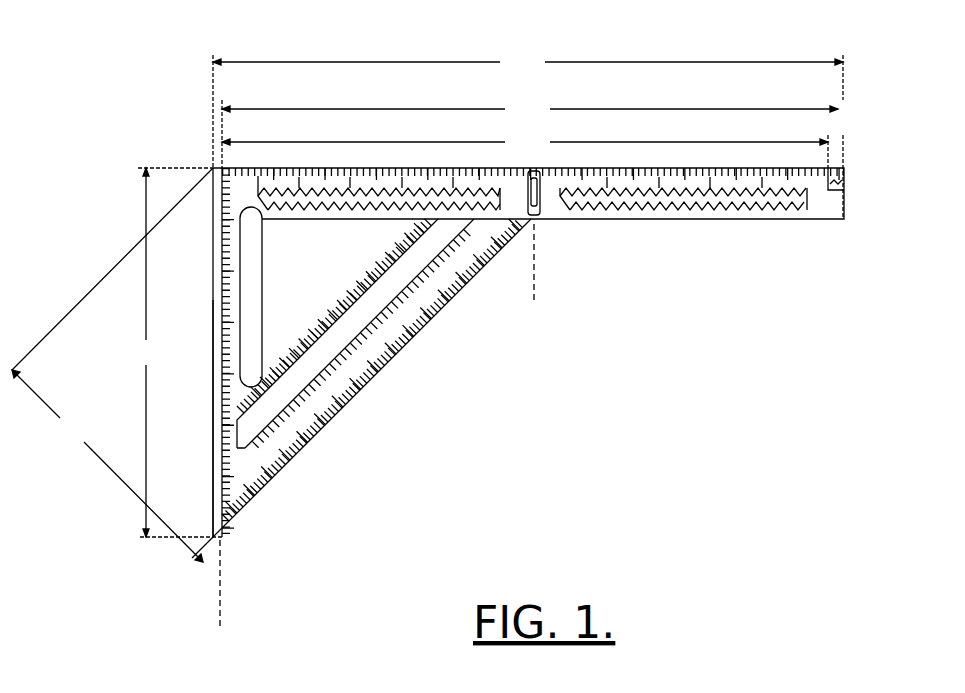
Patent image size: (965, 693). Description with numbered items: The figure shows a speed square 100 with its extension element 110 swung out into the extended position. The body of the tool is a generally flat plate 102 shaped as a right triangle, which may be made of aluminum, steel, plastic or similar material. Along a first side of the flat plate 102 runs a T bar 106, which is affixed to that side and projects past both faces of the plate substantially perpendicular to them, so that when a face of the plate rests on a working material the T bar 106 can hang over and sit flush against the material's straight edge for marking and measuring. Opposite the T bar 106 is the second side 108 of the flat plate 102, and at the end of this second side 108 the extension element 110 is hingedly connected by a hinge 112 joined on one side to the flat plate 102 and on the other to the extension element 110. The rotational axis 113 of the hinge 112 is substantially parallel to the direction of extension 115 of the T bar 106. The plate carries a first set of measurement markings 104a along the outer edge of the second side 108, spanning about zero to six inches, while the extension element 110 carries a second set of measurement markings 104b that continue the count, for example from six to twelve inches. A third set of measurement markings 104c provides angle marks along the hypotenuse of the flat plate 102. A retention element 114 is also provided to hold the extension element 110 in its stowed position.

The speed square 100 is at (532, 436).
The flat plate 102 is at (412, 345).
The first set of measurement markings 104a is at (373, 168).
The second set of measurement markings 104b is at (648, 170).
The third set of measurement markings 104c is at (340, 430).
The T bar 106 is at (213, 296).
The second side 108 is at (265, 185).
The extension element 110 is at (817, 215).
The hinge 112 is at (540, 218).
The rotational axis 113 is at (535, 300).
The retention element 114 is at (851, 190).
The direction of extension 115 is at (224, 598).